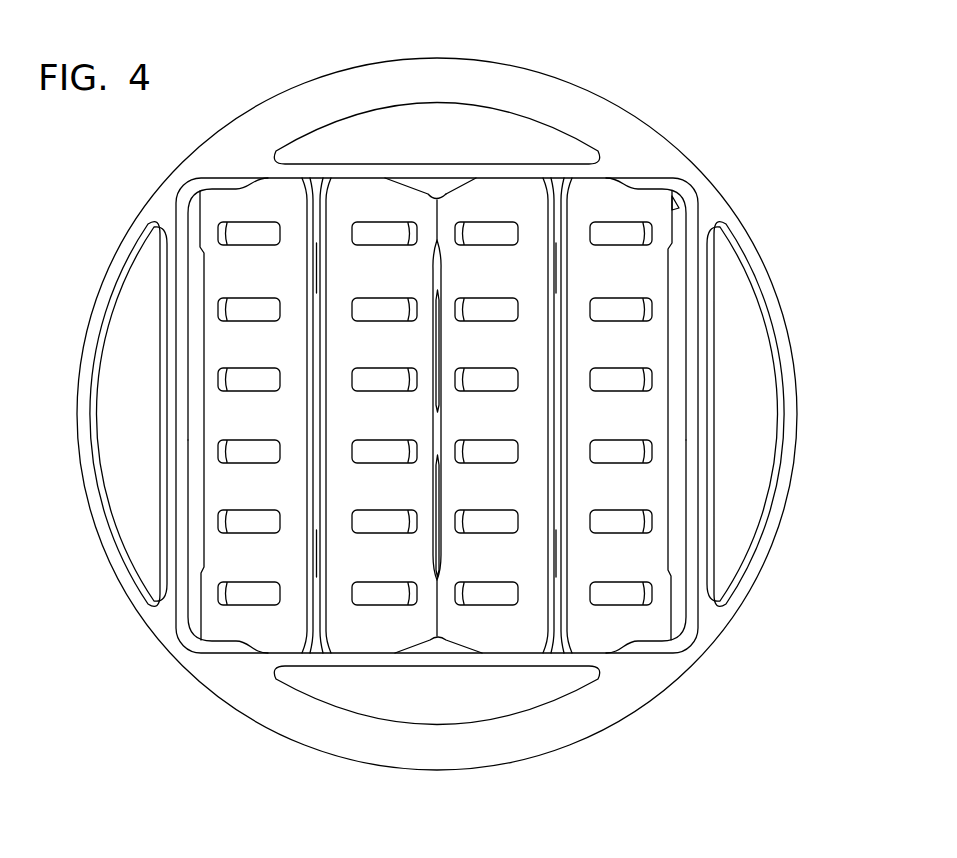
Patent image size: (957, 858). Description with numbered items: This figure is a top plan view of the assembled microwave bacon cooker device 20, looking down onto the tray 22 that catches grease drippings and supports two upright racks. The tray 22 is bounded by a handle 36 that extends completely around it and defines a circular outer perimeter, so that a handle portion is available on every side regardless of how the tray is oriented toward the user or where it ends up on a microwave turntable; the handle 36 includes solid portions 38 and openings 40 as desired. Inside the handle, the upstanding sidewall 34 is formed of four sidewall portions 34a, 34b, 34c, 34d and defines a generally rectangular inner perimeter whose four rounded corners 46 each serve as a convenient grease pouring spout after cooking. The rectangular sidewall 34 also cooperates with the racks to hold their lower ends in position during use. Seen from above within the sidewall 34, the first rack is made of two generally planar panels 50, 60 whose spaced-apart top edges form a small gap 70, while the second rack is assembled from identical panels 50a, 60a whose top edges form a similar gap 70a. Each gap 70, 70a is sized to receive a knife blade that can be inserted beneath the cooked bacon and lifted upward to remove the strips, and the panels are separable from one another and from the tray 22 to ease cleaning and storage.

The microwave bacon cooker device 20 is at (206, 722).
The tray 22 is at (615, 103).
The sidewall 34 is at (697, 450).
The sidewall portion 34a is at (438, 650).
The sidewall portion 34b is at (700, 568).
The sidewall portion 34c is at (410, 180).
The sidewall portion 34d is at (178, 447).
The handle 36 is at (770, 548).
The solid portions 38 is at (122, 458).
The openings 40 is at (473, 103).
The corners 46 is at (180, 190).
The panel 50 is at (220, 188).
The panel 50a is at (455, 185).
The panel 60 is at (412, 186).
The panel 60a is at (640, 177).
The gap 70 is at (316, 170).
The gap 70a is at (554, 170).